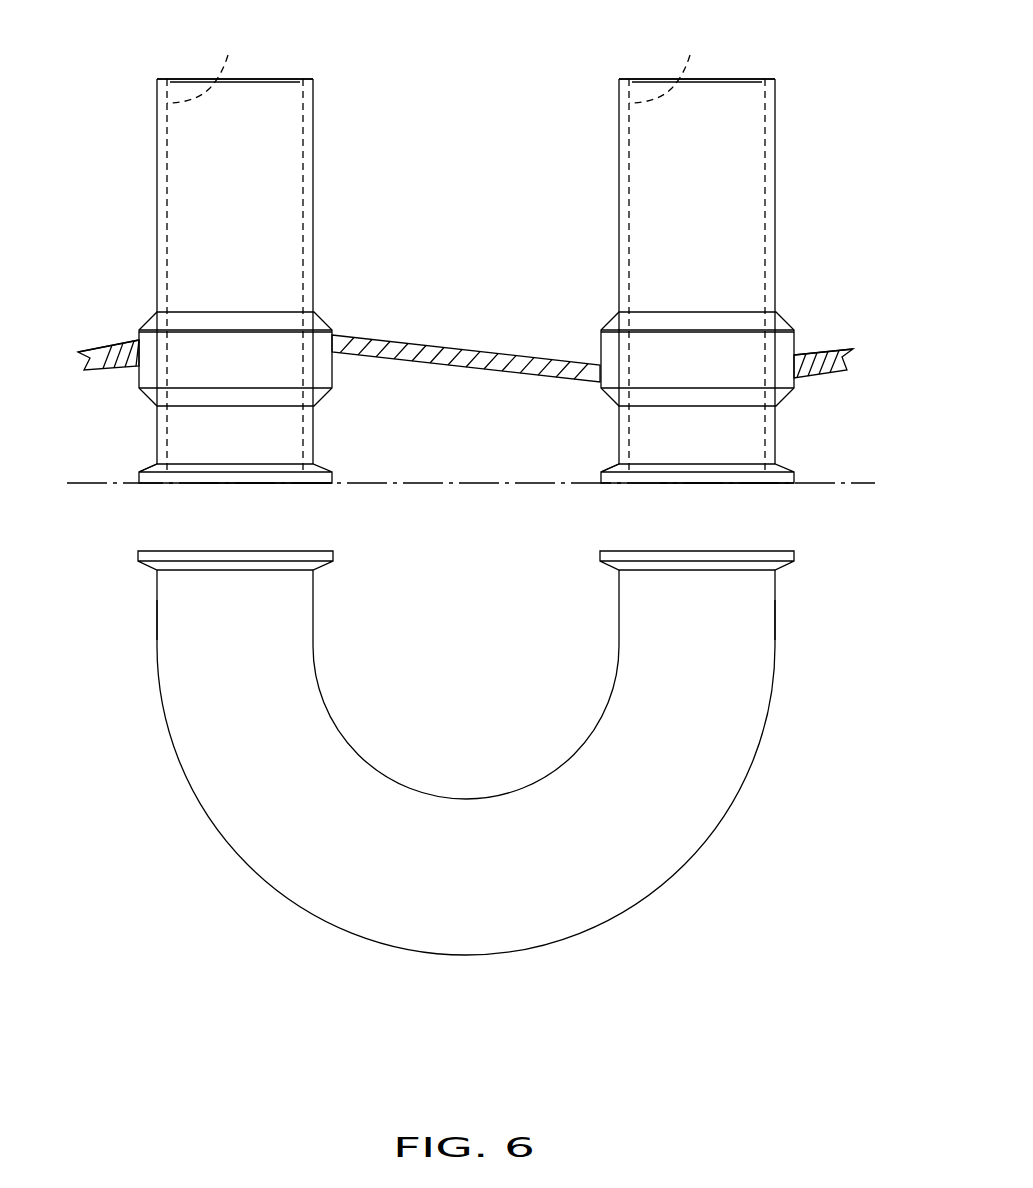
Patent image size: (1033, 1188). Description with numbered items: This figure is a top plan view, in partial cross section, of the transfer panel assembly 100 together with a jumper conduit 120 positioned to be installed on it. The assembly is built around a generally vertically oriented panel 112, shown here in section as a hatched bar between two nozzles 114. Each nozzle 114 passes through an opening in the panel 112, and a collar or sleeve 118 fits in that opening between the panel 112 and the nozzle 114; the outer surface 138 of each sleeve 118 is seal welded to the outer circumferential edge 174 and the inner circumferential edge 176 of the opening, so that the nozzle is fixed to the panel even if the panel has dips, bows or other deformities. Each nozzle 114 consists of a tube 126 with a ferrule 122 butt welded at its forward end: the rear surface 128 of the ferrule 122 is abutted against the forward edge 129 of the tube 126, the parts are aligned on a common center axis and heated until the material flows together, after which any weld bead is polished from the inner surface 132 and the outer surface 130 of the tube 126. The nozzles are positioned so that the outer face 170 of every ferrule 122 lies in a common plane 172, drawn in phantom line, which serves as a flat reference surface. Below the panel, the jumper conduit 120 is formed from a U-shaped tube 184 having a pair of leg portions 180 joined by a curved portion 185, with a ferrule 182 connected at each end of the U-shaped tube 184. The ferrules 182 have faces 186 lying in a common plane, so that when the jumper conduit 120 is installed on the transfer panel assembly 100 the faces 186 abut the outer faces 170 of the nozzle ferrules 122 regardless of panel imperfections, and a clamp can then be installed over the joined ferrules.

The transfer panel assembly 100 is at (828, 78).
The panel 112 is at (397, 326).
The nozzle 114 is at (316, 272).
The sleeve 118 is at (199, 410).
The jumper conduit 120 is at (463, 778).
The ferrule 122 is at (320, 476).
The tube 126 is at (190, 268).
The rear surface 128 is at (195, 465).
The forward edge 129 is at (220, 481).
The outer surface 130 is at (250, 184).
The inner surface 132 is at (440, 64).
The outer surface 138 is at (252, 368).
The outer face 170 is at (296, 484).
The common plane 172 is at (117, 483).
The outer circumferential edge 174 is at (135, 365).
The inner circumferential edge 176 is at (135, 338).
The leg portion 180 is at (185, 624).
The ferrule 182 is at (193, 568).
The U-shaped tube 184 is at (280, 902).
The curved portion 185 is at (472, 845).
The face 186 is at (296, 552).